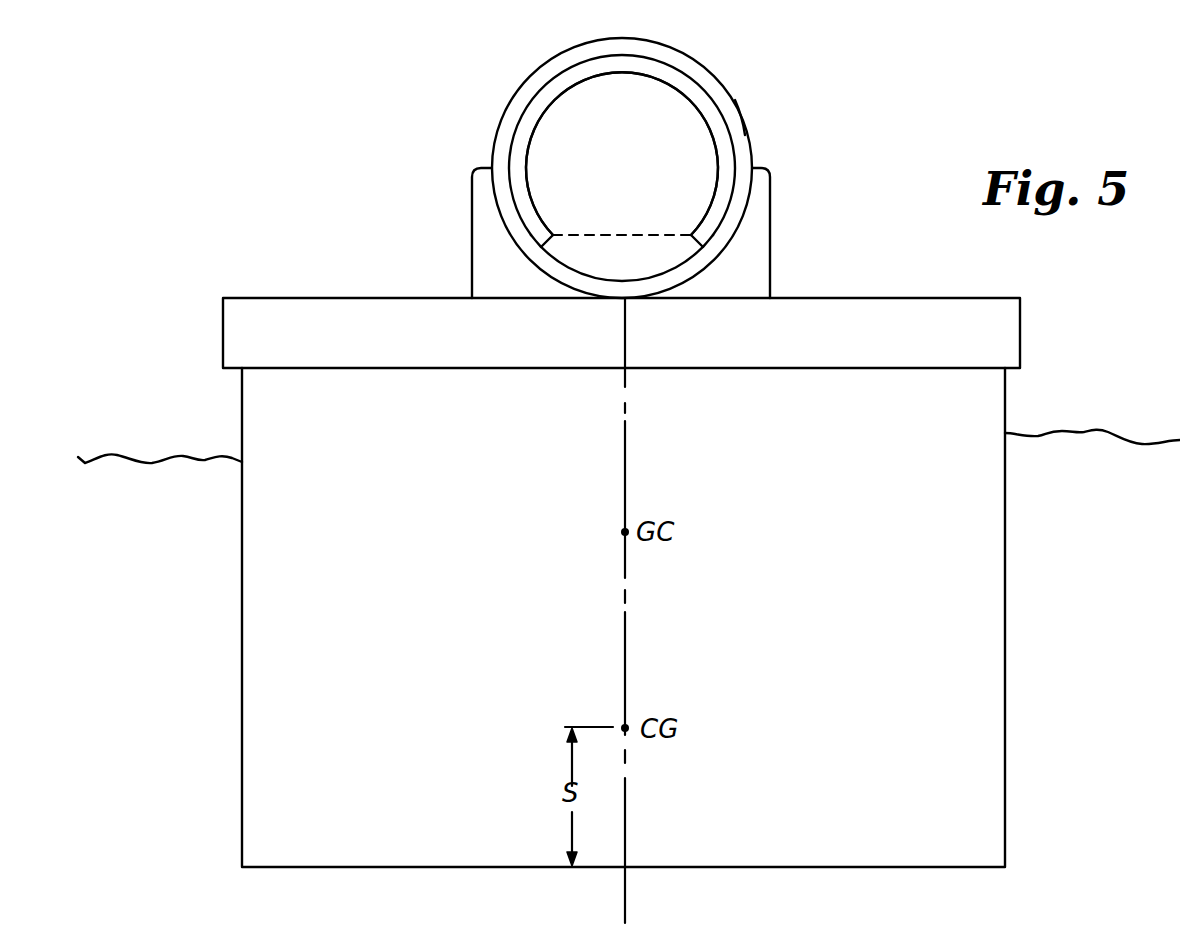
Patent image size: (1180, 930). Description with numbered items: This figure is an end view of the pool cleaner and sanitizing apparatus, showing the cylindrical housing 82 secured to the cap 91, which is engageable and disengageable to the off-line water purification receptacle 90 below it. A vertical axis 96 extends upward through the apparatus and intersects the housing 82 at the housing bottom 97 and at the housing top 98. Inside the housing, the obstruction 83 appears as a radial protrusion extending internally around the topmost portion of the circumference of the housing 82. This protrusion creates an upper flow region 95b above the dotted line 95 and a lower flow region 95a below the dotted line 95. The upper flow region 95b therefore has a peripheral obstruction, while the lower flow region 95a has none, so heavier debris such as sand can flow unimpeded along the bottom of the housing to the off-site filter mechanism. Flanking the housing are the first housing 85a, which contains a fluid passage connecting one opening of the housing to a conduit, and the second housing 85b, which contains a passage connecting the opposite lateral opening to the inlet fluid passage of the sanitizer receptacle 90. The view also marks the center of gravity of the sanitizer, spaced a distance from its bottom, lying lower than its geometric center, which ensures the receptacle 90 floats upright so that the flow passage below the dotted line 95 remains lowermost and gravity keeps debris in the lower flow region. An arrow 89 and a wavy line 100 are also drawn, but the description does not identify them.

The cylindrical housing 82 is at (718, 77).
The obstruction 83 is at (650, 67).
The first housing 85a is at (472, 178).
The second housing 85b is at (770, 168).
The outer surface of tube 89 is at (745, 119).
The off-line water purification receptacle 90 is at (995, 601).
The cap 91 is at (1020, 330).
The dotted line 95 is at (594, 235).
The lower flow region 95a is at (622, 257).
The upper flow region 95b is at (622, 153).
The vertical axis 96 is at (625, 572).
The housing bottom 97 is at (602, 278).
The housing top 98 is at (602, 90).
The ground level 100 is at (1048, 432).